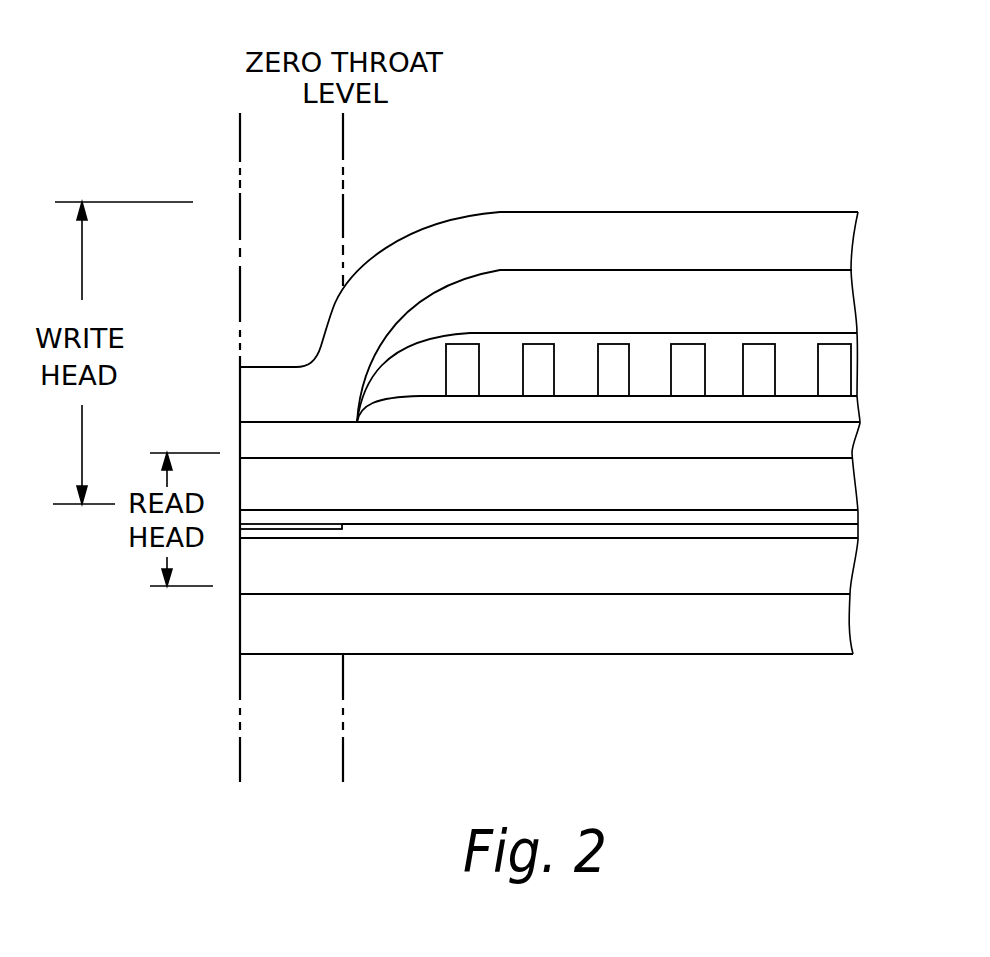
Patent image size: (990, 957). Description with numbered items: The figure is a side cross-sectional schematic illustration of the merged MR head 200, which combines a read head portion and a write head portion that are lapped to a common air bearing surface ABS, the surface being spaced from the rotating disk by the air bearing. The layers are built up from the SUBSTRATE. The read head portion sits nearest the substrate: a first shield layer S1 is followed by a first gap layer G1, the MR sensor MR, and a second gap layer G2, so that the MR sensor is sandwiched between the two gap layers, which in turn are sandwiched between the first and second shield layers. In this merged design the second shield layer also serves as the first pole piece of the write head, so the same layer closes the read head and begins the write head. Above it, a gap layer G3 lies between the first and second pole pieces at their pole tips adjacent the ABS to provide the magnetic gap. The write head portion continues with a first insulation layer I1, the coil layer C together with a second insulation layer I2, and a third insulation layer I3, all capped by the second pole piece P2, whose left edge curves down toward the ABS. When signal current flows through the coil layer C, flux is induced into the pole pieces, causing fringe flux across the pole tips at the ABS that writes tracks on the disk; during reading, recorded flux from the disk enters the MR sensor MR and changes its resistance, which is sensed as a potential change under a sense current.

The merged MR head 200 is at (745, 105).
The air bearing surface ABS is at (238, 222).
The second pole piece P2 is at (549, 289).
The third insulation layer I3 is at (604, 346).
The second insulation layer I2 is at (607, 377).
The coil layer C is at (648, 370).
The first insulation layer I1 is at (607, 410).
The gap layer G3 is at (550, 440).
The second gap layer G2 is at (882, 519).
The MR sensor MR is at (260, 511).
The first gap layer G1 is at (882, 543).
The first shield layer S1 is at (545, 573).
The substrate SUBSTRATE is at (546, 633).